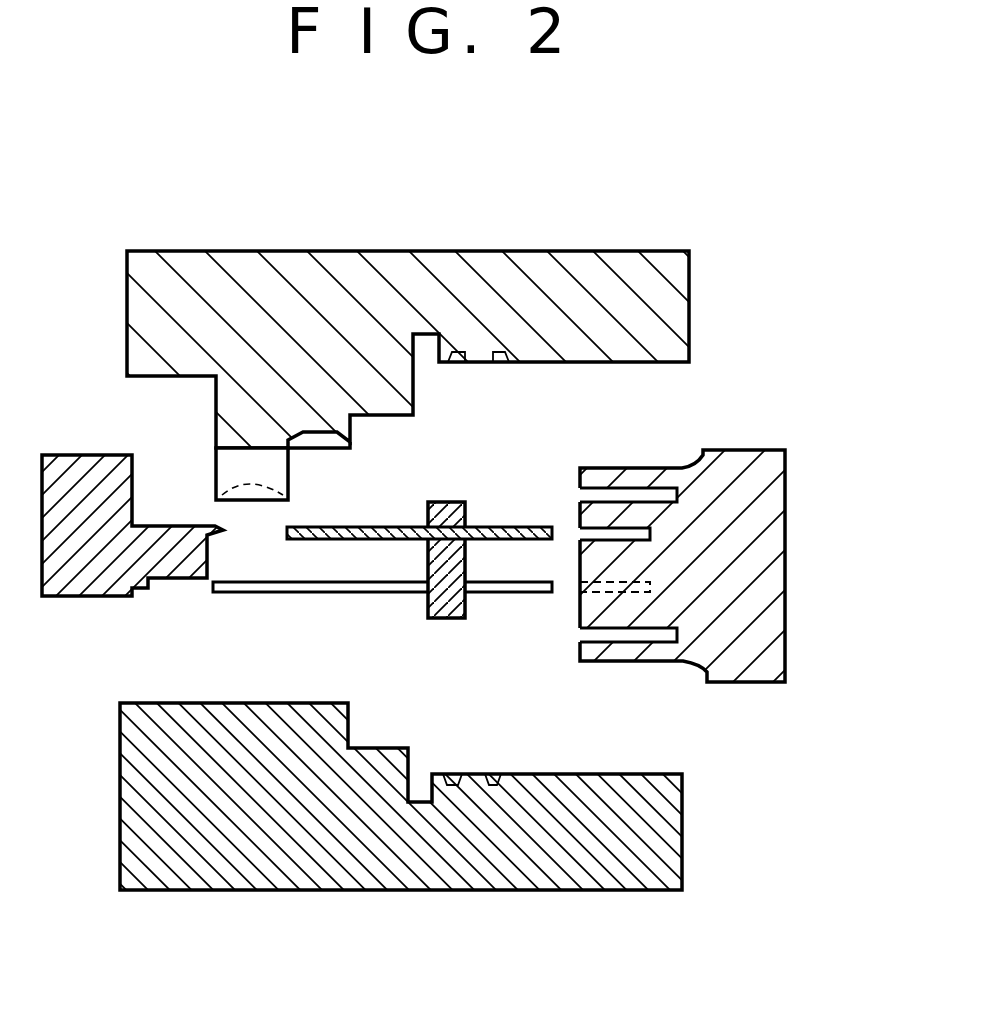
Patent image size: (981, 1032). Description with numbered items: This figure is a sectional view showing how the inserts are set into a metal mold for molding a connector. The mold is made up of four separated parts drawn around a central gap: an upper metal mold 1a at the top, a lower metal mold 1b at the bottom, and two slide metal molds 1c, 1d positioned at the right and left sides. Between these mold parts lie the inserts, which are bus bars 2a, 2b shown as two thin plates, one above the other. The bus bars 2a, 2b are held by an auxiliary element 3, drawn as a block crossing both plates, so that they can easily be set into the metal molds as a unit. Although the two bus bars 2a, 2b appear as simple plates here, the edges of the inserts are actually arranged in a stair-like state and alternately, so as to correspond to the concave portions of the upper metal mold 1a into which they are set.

The upper metal mold 1a is at (675, 315).
The lower metal mold 1b is at (613, 875).
The slide metal mold 1c is at (748, 643).
The slide metal mold 1d is at (68, 583).
The bus bar 2a is at (508, 530).
The bus bar 2b is at (508, 588).
The auxiliary element 3 is at (442, 500).